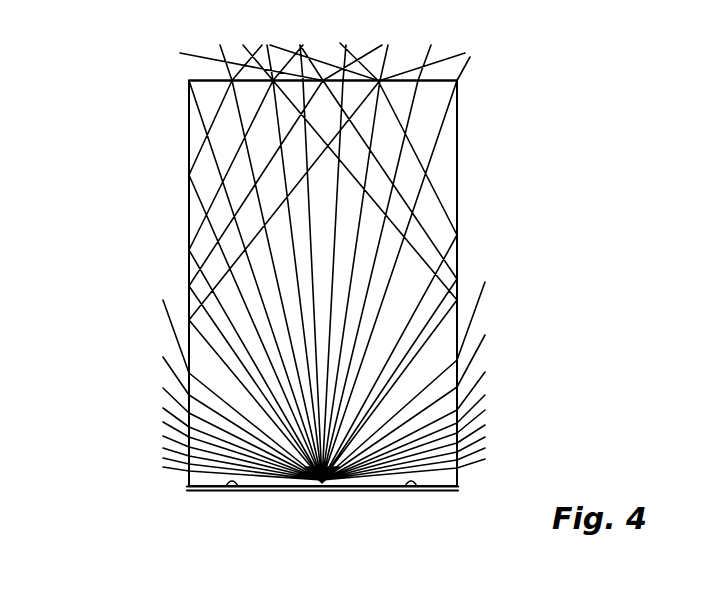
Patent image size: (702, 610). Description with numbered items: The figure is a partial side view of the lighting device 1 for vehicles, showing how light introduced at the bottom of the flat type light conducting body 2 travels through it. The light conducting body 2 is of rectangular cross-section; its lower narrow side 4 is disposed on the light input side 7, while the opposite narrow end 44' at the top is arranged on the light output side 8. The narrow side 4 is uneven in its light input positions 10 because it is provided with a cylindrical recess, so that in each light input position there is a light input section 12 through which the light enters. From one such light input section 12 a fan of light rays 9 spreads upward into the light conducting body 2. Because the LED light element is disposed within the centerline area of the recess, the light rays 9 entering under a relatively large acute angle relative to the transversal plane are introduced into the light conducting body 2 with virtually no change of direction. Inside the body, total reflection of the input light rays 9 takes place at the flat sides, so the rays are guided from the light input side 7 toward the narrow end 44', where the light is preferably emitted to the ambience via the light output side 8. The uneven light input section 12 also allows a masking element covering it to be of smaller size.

The lighting device 1 is at (117, 492).
The light conducting body 2 is at (447, 352).
The narrow side 4 is at (430, 491).
The light input side 7 is at (486, 477).
The light output side 8 is at (506, 89).
The light rays 9 is at (435, 288).
The light input positions 10 is at (229, 500).
The light input section 12 is at (330, 492).
The narrow end 44' is at (275, 90).